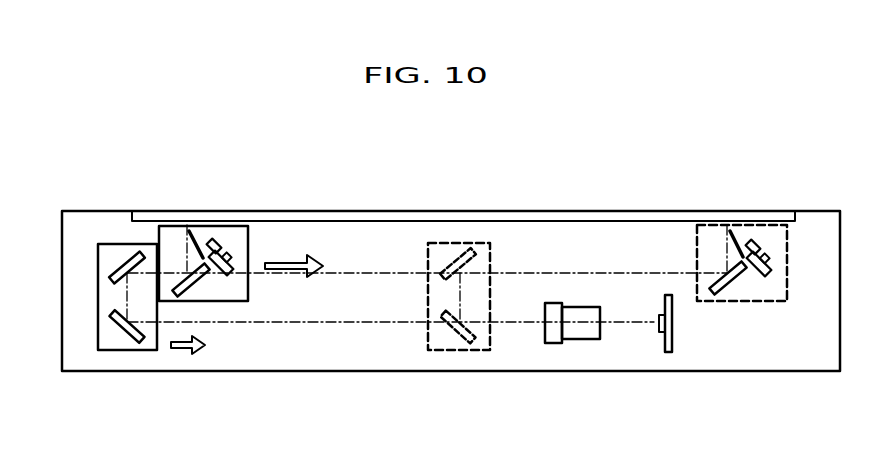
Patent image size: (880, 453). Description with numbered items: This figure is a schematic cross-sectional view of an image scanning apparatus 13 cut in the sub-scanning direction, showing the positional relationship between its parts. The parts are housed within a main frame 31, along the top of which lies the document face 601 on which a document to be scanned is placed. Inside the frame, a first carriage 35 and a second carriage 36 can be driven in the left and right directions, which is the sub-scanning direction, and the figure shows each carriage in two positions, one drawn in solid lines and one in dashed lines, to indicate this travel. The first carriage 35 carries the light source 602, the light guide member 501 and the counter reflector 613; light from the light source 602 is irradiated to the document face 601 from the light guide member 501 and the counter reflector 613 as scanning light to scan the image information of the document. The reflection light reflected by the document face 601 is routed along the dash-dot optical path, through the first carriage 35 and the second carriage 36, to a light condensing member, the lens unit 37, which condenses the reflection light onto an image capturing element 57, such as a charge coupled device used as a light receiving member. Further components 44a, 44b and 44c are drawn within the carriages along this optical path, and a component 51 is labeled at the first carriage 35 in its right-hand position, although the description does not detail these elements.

The image scanning apparatus 13 is at (56, 257).
The main frame 31 is at (82, 372).
The first carriage 35 is at (250, 285).
The second carriage 36 is at (112, 242).
The lens unit 37 is at (600, 332).
The mirror 44a is at (207, 276).
The mirror 44b is at (125, 255).
The mirror 44c is at (118, 322).
The light source unit 51 is at (516, 220).
The image capturing element 57 is at (672, 340).
The light guide member 501 is at (222, 243).
The light source 602 is at (233, 253).
The counter reflector 613 is at (202, 240).
The document face 601 is at (420, 208).